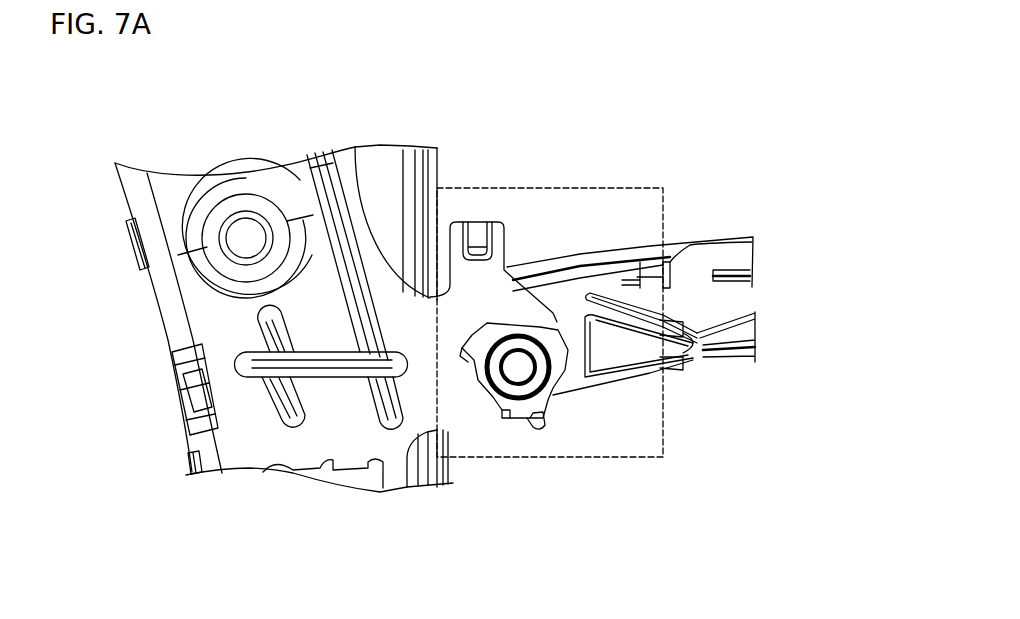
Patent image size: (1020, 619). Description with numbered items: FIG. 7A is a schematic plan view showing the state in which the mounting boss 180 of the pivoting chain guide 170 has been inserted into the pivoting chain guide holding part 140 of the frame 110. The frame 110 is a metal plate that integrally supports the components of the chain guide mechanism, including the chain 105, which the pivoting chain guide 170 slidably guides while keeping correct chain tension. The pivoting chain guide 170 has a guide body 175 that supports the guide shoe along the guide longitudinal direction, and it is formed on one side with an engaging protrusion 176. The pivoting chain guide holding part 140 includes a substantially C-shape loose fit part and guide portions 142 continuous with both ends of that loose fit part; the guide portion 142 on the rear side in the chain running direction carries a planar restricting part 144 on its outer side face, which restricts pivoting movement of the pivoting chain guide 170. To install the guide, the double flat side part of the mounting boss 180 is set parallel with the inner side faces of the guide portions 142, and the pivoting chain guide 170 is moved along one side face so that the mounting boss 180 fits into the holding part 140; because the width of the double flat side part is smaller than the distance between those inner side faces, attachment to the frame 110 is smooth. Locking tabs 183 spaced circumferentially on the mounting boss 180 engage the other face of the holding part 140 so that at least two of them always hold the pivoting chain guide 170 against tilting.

The chain 105 is at (420, 147).
The frame 110 is at (248, 440).
The pivoting chain guide holding part 140 is at (541, 296).
The guide portions 142 is at (525, 413).
The restricting part 144 is at (507, 240).
The pivoting chain guide 170 is at (613, 245).
The guide body 175 is at (703, 357).
The engaging protrusion 176 is at (640, 262).
The mounting boss 180 is at (550, 390).
The locking tabs 183 is at (460, 358).